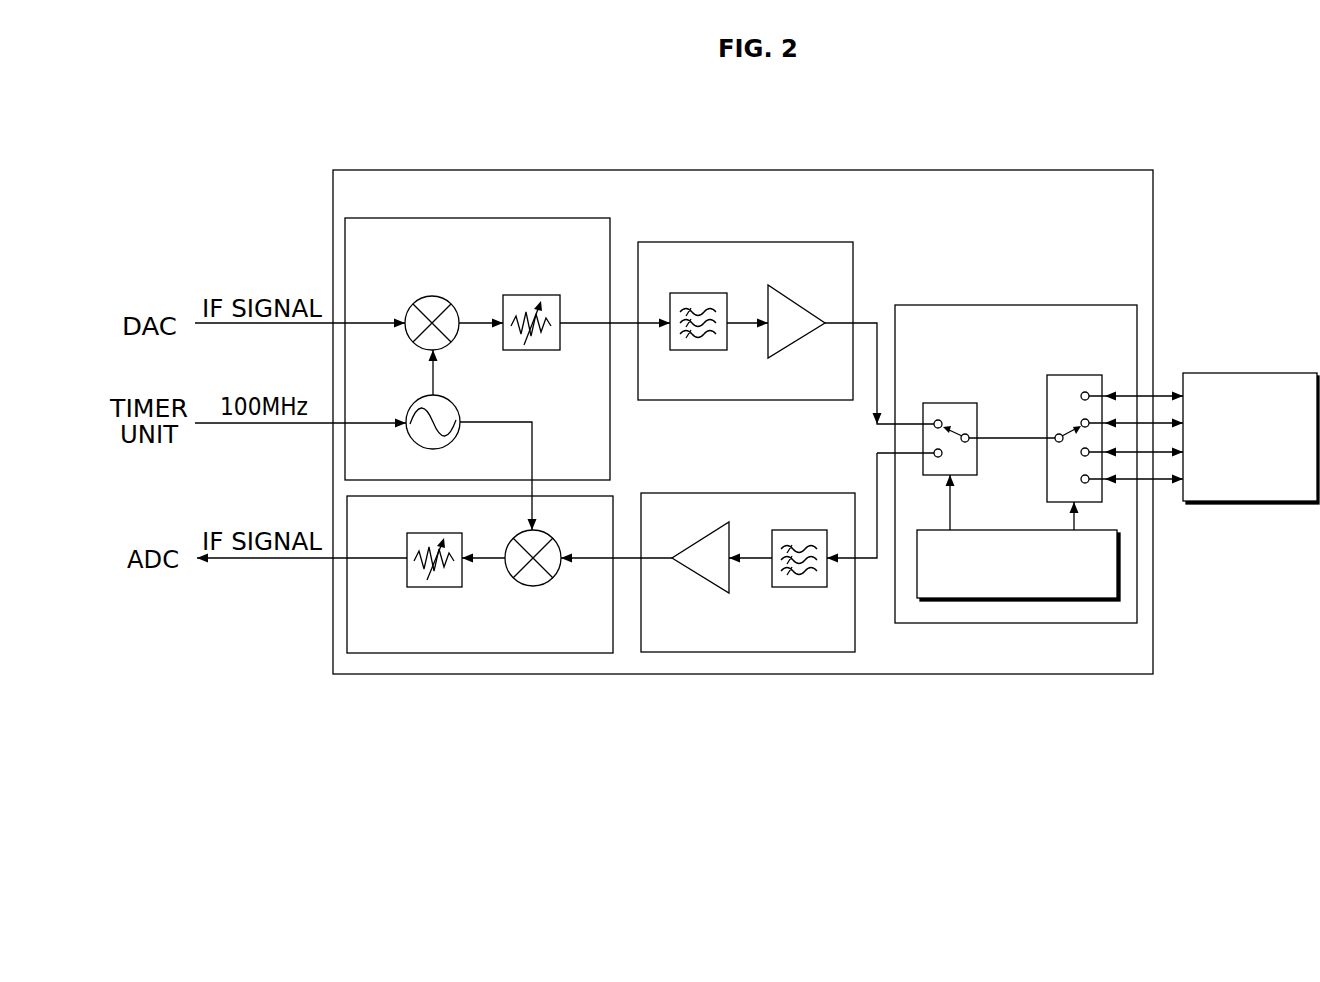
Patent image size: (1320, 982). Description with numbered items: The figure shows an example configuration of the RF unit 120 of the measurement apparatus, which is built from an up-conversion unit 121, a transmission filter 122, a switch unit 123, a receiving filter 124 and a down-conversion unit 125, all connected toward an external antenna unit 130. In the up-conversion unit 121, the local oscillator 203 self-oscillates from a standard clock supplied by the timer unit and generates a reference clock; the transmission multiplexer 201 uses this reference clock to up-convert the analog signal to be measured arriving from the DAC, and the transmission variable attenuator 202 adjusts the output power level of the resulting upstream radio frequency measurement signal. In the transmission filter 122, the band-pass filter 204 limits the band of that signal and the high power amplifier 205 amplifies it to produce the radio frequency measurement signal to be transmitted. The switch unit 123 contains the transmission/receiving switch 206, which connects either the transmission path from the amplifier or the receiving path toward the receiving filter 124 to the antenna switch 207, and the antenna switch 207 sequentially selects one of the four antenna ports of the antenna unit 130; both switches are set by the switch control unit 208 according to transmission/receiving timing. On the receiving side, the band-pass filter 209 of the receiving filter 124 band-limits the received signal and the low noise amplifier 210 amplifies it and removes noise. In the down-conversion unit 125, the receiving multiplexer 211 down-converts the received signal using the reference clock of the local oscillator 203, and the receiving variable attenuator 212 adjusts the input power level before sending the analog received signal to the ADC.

The RF unit 120 is at (741, 170).
The up-conversion unit 121 is at (478, 218).
The transmission filter 122 is at (748, 242).
The switch unit 123 is at (1034, 304).
The receiving filter 124 is at (745, 652).
The down-conversion unit 125 is at (478, 653).
The antenna unit 130 is at (1245, 373).
The transmission multiplexer 201 is at (432, 296).
The transmission variable attenuator 202 is at (533, 352).
The local oscillator 203 is at (452, 406).
The band-pass filter 204 is at (698, 293).
The high power amplifier 205 is at (805, 310).
The transmission/receiving switch 206 is at (923, 436).
The antenna switch 207 is at (1100, 502).
The switch control unit 208 is at (1120, 566).
The band-pass filter 209 is at (797, 530).
The low noise amplifier 210 is at (698, 541).
The receiving multiplexer 211 is at (513, 538).
The receiving variable attenuator 212 is at (407, 533).